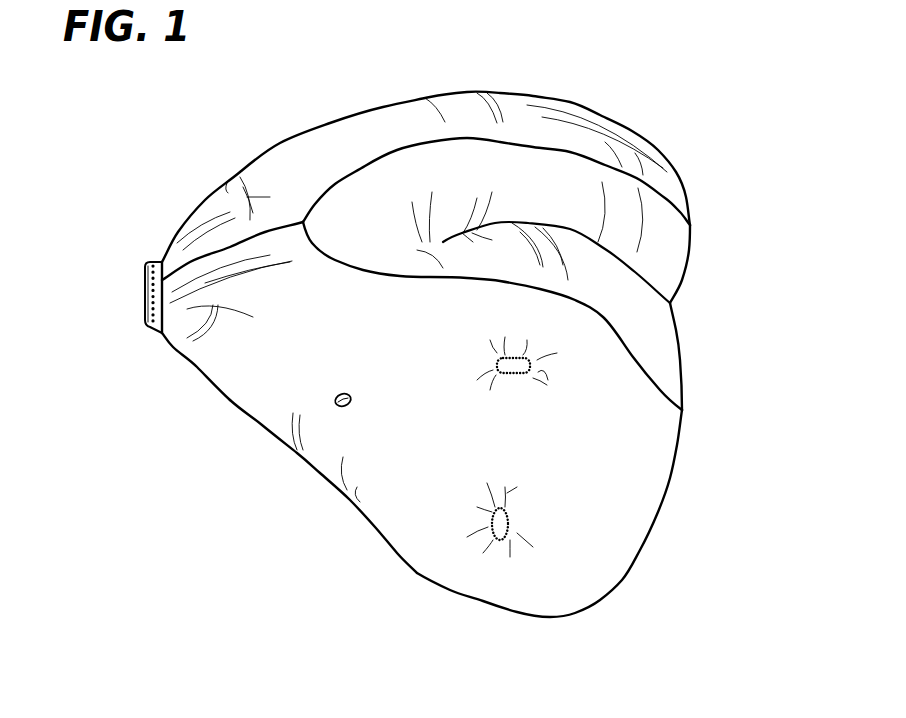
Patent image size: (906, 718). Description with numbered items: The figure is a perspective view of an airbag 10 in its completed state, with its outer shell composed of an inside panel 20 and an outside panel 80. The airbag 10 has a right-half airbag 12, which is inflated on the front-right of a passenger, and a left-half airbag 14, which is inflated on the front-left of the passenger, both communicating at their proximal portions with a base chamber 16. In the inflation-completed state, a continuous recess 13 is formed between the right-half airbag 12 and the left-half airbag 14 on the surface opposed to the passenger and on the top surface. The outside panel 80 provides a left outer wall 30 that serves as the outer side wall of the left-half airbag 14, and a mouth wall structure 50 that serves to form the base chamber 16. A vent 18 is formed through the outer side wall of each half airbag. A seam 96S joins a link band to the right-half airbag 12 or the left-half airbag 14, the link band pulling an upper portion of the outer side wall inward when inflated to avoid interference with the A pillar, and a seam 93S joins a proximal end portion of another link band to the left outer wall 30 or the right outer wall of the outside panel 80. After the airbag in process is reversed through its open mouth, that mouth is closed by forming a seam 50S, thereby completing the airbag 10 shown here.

The airbag 10 is at (502, 78).
The right-half airbag 12 is at (570, 125).
The recess 13 is at (677, 305).
The left-half airbag 14 is at (558, 622).
The base chamber 16 is at (223, 343).
The vent 18 is at (353, 398).
The inside panel 20 is at (665, 358).
The left outer wall 30 is at (383, 107).
The mouth wall structure 50 is at (228, 193).
The seam 50S is at (153, 261).
The outside panel 80 is at (350, 500).
The seam 93S is at (510, 513).
The seam 96S is at (513, 377).